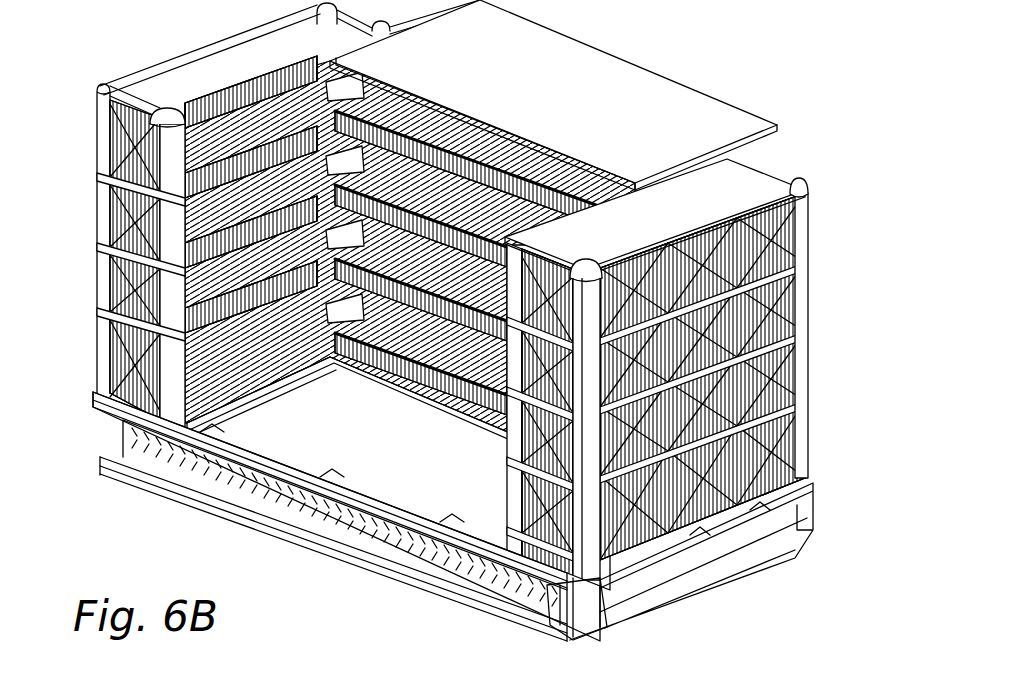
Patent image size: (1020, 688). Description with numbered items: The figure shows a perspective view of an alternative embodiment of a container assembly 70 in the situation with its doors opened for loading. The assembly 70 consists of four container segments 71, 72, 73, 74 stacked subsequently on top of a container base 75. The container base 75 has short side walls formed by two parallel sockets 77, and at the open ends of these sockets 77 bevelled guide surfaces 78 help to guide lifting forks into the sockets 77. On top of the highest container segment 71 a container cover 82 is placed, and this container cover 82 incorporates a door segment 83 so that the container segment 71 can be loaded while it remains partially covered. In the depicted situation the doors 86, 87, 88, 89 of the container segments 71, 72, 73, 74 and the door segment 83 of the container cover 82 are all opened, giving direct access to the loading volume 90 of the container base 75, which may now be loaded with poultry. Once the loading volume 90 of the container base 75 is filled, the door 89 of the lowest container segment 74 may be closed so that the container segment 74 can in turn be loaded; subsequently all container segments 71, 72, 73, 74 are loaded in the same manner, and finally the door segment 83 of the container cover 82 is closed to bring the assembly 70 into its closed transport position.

The assembly 70 is at (110, 51).
The container segment 71 is at (772, 240).
The container segment 72 is at (772, 310).
The container segment 73 is at (772, 380).
The container segment 74 is at (772, 450).
The container base 75 is at (806, 512).
The sockets 77 is at (220, 400).
The bevelled guide surfaces 78 is at (118, 446).
The container cover 82 is at (740, 184).
The door segment 83 is at (668, 117).
The door 86 is at (364, 120).
The door 87 is at (364, 193).
The door 88 is at (364, 267).
The door 89 is at (364, 342).
The loading volume 90 is at (329, 452).